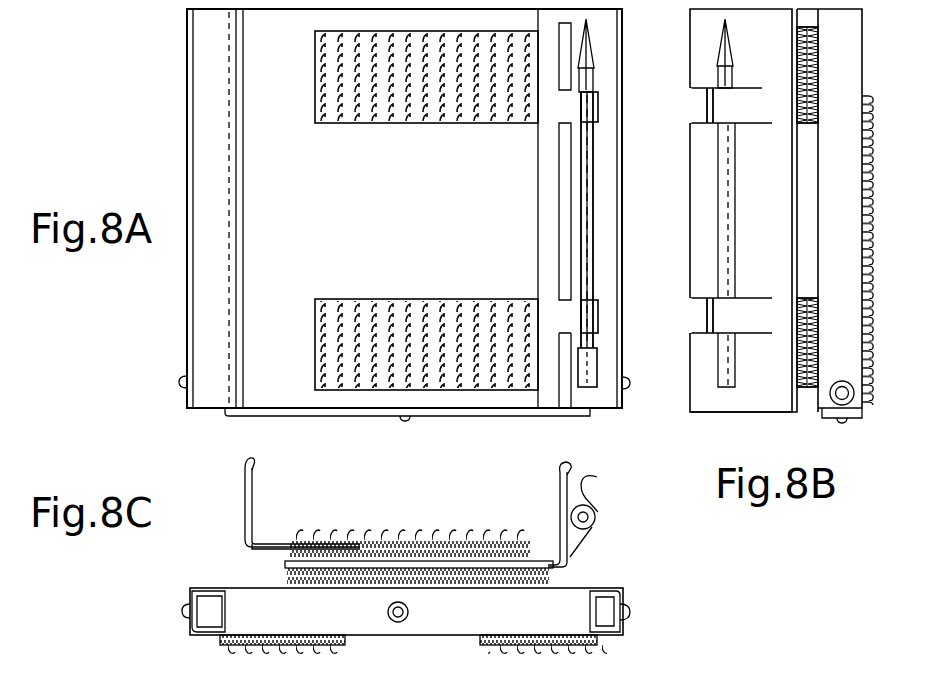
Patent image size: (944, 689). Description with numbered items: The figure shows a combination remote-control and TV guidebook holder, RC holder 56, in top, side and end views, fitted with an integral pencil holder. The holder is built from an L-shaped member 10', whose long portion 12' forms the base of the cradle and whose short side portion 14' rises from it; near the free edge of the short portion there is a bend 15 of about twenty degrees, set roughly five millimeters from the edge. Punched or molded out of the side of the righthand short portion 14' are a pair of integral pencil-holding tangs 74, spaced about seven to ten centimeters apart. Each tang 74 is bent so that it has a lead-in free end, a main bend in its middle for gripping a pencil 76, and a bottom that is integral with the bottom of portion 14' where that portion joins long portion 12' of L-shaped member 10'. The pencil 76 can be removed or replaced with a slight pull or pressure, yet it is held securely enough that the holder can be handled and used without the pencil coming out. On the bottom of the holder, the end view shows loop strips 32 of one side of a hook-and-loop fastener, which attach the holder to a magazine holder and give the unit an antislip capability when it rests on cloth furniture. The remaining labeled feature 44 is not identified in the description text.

In FIG. 8A, the pencil 76 is at (592, 55).
In FIG. 8B, the pencil 76 is at (720, 215).
In FIG. 8C, the pencil 76 is at (597, 520).
In FIG. 8A, the pencil-holding tang 74 is at (599, 108).
In FIG. 8B, the pencil-holding tang 74 is at (707, 105).
In FIG. 8C, the pencil-holding tang 74 is at (596, 478).
In FIG. 8A, the rivet 44 is at (180, 382).
In FIG. 8C, the rivet 44 is at (398, 623).
In FIG. 8C, the bend 15 is at (246, 466).
In FIG. 8C, the side portion 14' is at (406, 517).
In FIG. 8C, the RC holder 56 is at (230, 540).
In FIG. 8C, the long portion 12' is at (418, 545).
In FIG. 8C, the L-shaped member 10' is at (458, 574).
In FIG. 8C, the loop strip 32 is at (530, 648).